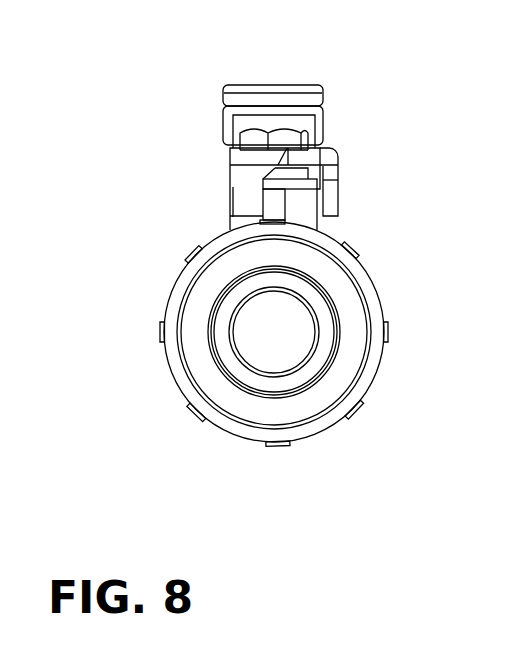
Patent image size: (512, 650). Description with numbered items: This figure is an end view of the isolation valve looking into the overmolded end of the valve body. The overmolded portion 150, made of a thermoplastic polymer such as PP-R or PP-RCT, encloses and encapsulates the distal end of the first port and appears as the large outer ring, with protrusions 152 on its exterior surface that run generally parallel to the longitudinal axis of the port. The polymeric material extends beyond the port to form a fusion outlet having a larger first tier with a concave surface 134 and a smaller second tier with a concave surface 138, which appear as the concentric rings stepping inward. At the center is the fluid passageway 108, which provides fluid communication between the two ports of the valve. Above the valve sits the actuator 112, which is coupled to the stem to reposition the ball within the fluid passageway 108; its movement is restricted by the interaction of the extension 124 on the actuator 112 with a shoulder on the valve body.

The fluid passageway 108 is at (270, 333).
The actuator 112 is at (282, 85).
The extension 124 is at (332, 198).
The concave surface 134 is at (347, 365).
The concave surface 138 is at (322, 312).
The overmolded portion 150 is at (183, 272).
The protrusions 152 is at (343, 250).